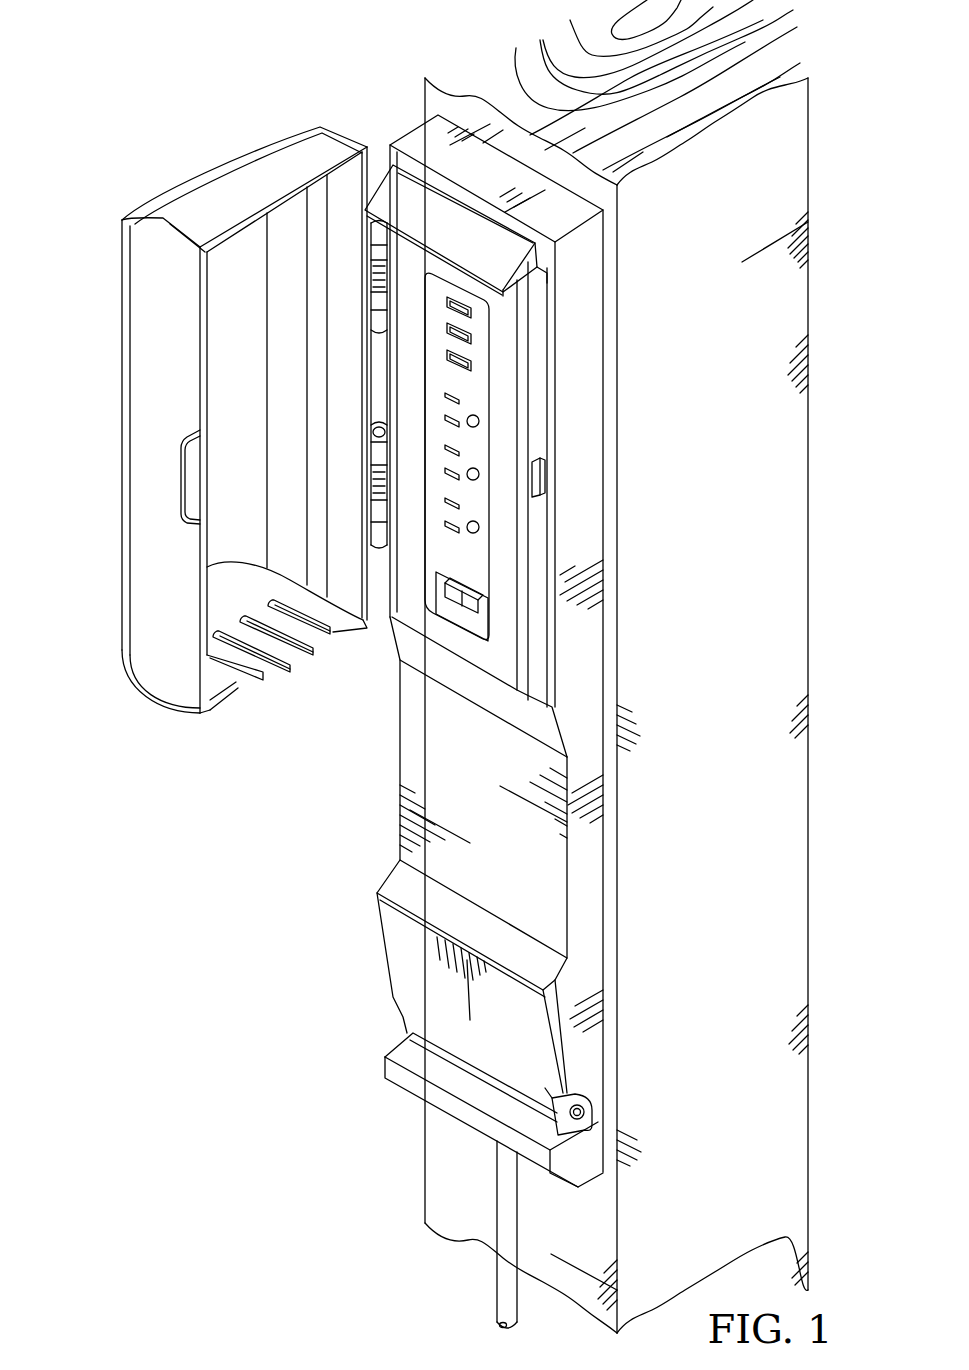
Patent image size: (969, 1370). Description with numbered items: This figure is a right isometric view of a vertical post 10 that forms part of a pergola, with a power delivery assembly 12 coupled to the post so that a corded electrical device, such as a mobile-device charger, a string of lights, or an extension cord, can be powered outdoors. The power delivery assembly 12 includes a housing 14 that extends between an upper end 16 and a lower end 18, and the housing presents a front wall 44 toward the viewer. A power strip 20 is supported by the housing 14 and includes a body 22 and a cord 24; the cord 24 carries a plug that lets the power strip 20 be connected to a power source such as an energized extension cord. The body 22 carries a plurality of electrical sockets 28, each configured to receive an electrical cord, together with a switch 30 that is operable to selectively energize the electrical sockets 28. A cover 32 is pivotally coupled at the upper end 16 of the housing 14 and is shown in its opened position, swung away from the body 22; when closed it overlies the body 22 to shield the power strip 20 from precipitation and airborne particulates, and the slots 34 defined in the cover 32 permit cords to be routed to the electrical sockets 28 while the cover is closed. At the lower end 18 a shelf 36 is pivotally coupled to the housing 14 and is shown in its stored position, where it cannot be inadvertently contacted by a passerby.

The vertical post 10 is at (790, 168).
The power delivery assembly 12 is at (410, 70).
The housing 14 is at (392, 124).
The upper end 16 is at (604, 278).
The lower end 18 is at (377, 847).
The power strip 20 is at (436, 298).
The body 22 is at (477, 397).
The cord 24 is at (520, 1212).
The electrical sockets 28 is at (476, 340).
The switch 30 is at (455, 600).
The cover 32 is at (122, 430).
The slots 34 is at (245, 692).
The shelf 36 is at (403, 945).
The front wall 44 is at (415, 712).